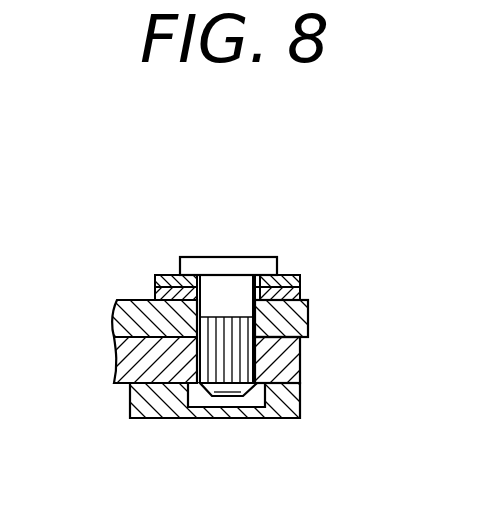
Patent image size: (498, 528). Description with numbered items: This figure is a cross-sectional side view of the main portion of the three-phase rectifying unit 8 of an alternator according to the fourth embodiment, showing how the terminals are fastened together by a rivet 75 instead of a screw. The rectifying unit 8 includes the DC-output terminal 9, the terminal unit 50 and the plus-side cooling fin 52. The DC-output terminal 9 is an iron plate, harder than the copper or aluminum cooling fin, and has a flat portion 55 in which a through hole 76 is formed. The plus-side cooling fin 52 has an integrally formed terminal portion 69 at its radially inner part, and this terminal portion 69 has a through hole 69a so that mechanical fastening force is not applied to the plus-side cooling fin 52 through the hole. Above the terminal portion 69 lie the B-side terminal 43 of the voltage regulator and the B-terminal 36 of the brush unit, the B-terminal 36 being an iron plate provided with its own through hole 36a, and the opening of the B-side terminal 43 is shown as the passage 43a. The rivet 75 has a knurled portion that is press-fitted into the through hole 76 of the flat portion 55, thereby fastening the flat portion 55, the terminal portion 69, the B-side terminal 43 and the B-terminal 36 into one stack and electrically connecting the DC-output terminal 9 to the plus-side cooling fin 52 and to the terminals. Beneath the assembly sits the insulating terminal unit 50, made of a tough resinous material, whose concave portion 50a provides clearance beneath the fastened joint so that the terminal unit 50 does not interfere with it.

The three-phase rectifying unit 8 is at (244, 380).
The DC-output terminal 9 is at (244, 328).
The B-terminal 36 is at (154, 281).
The through hole 36a is at (204, 278).
The B-side terminal 43 is at (153, 290).
The inner edge of lower flange plate 43a is at (199, 298).
The terminal unit 50 is at (156, 418).
The concave portion 50a is at (229, 403).
The plus-side cooling fin 52 is at (116, 300).
The flat portion 55 is at (292, 367).
The terminal portion 69 is at (302, 310).
The through hole 69a is at (303, 298).
The rivet 75 is at (207, 270).
The through hole 76 is at (250, 355).